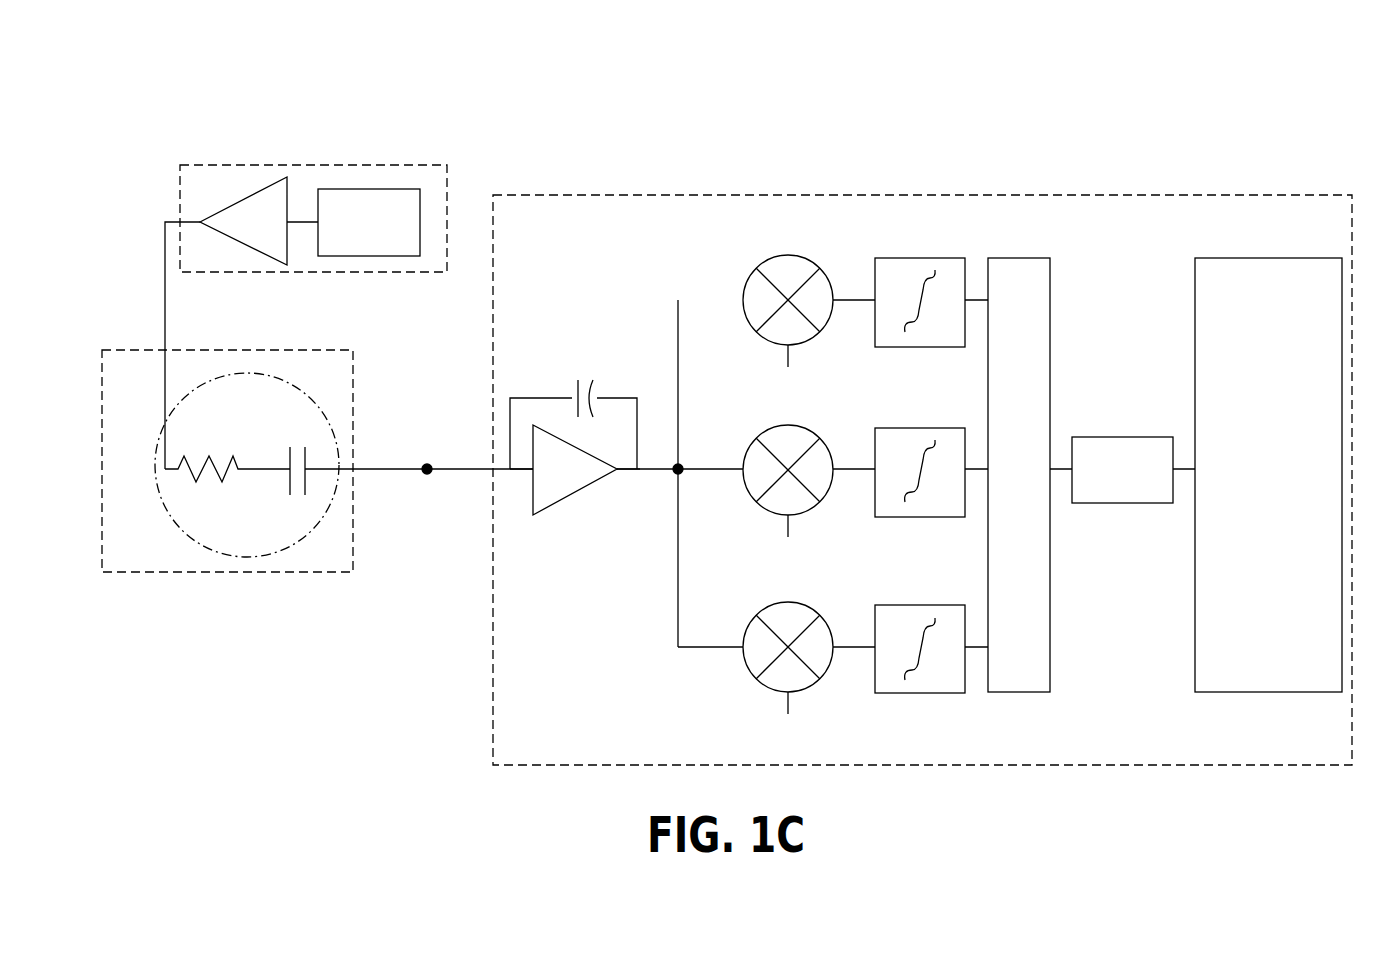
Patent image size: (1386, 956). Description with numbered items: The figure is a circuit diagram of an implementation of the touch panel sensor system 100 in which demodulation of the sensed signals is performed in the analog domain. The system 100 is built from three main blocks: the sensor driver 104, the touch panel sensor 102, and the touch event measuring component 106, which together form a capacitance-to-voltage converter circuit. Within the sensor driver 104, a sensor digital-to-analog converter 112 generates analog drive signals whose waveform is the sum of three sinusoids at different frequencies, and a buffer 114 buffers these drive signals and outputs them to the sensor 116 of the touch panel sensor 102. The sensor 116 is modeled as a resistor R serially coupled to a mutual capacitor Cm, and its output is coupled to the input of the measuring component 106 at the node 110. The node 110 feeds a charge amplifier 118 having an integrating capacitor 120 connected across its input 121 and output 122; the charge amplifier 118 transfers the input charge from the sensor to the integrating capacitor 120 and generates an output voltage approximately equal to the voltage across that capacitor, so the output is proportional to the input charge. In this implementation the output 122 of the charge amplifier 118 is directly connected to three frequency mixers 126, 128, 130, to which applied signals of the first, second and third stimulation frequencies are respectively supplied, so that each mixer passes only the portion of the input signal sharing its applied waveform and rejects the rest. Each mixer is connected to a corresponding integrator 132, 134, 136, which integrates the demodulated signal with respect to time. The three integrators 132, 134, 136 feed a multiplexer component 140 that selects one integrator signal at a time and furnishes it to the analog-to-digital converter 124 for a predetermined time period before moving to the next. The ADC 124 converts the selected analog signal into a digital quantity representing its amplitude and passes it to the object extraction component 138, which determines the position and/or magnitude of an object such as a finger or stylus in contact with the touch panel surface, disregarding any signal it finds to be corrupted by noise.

The touch panel sensor system 100 is at (1122, 86).
The touch panel sensor 102 is at (140, 349).
The sensor driver 104 is at (448, 186).
The touch event measuring component 106 is at (1160, 194).
The node N1 110 is at (428, 462).
The sensor digital-to-analog converter 112 is at (335, 258).
The buffer 114 is at (245, 197).
The sensor 116 is at (163, 500).
The charge amplifier 118 is at (577, 478).
The integrating capacitor 120 is at (572, 393).
The input 121 is at (533, 472).
The output 122 is at (619, 466).
The analog-to-digital converter 124 is at (1120, 437).
The frequency mixer 126 is at (743, 285).
The frequency mixer 128 is at (743, 455).
The frequency mixer 130 is at (743, 632).
The integrator 132 is at (910, 258).
The integrator 134 is at (910, 428).
The integrator 136 is at (910, 606).
The object extraction component 138 is at (1268, 475).
The multiplexer component 140 is at (1019, 475).